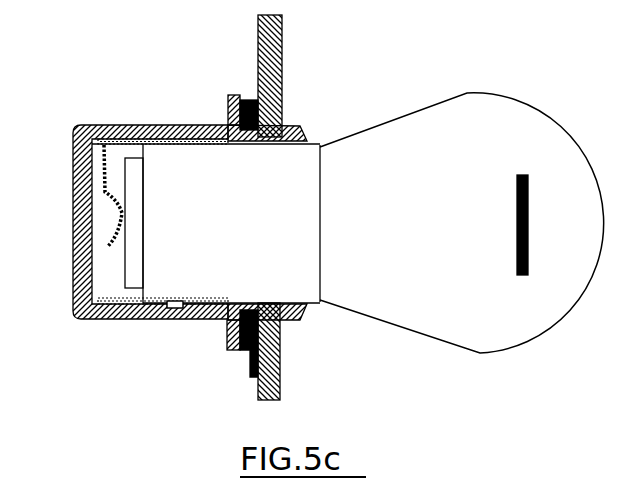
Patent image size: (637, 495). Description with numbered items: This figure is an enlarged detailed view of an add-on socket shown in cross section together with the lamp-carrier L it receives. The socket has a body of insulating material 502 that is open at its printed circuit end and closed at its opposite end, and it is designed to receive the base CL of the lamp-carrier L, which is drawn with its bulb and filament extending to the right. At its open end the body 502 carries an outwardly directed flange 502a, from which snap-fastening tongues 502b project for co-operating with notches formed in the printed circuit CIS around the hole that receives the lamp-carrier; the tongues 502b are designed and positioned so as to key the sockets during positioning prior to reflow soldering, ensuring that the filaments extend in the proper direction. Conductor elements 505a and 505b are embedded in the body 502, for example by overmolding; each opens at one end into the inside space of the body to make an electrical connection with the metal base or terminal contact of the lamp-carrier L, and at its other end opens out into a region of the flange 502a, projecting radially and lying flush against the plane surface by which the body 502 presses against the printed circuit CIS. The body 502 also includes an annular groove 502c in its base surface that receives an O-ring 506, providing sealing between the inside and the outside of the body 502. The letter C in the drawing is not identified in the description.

The body of insulating material 502 is at (128, 320).
The outwardly directed flange 502a is at (238, 94).
The snap-fastening tongues 502b is at (298, 132).
The annular groove 502c is at (258, 300).
The conductor element 505a is at (125, 123).
The conductor element 505b is at (200, 325).
The O-ring 506 is at (247, 140).
The base of lamp-carrier CL is at (257, 235).
The printed circuit CIS is at (281, 380).
The lamp-carrier L is at (490, 327).
The capsule C is at (630, 371).